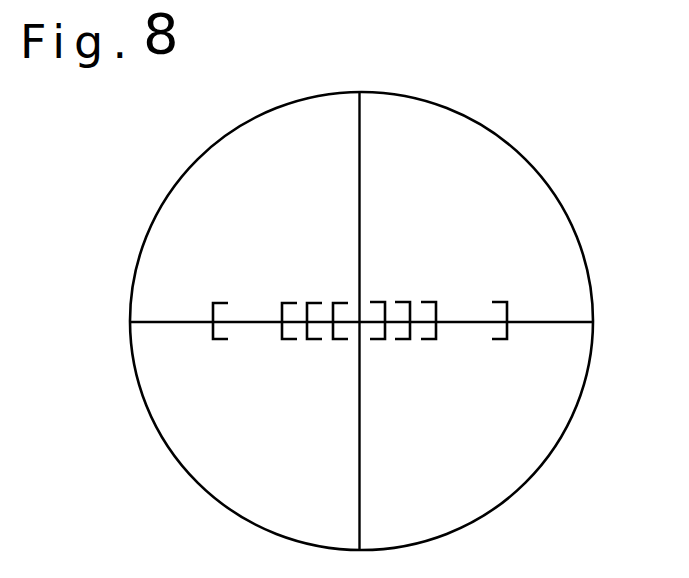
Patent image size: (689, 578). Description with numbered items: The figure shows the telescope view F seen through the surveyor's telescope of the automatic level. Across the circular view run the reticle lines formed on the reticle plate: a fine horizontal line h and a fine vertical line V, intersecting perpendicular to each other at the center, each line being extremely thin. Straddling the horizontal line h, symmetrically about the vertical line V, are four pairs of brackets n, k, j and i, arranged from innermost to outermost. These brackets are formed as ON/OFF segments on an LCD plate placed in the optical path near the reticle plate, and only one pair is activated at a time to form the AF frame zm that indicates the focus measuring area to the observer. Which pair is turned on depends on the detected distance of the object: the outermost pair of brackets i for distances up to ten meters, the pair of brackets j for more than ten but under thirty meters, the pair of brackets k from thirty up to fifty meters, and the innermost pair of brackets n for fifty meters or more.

The telescope view F is at (521, 166).
The fine vertical line V is at (358, 143).
The fine horizontal line h is at (559, 320).
The AF frame zm is at (289, 266).
The pair of brackets i is at (220, 341).
The pair of brackets j is at (287, 341).
The pair of brackets k is at (313, 341).
The pair of brackets n is at (340, 341).